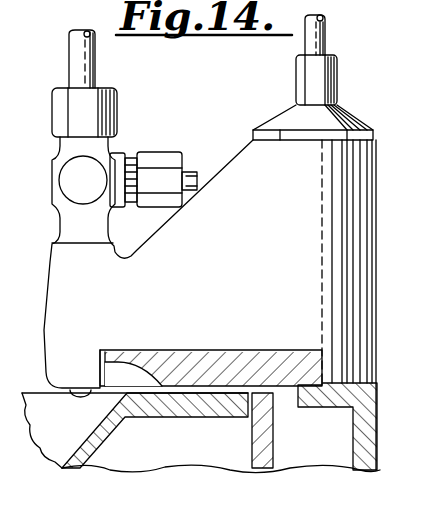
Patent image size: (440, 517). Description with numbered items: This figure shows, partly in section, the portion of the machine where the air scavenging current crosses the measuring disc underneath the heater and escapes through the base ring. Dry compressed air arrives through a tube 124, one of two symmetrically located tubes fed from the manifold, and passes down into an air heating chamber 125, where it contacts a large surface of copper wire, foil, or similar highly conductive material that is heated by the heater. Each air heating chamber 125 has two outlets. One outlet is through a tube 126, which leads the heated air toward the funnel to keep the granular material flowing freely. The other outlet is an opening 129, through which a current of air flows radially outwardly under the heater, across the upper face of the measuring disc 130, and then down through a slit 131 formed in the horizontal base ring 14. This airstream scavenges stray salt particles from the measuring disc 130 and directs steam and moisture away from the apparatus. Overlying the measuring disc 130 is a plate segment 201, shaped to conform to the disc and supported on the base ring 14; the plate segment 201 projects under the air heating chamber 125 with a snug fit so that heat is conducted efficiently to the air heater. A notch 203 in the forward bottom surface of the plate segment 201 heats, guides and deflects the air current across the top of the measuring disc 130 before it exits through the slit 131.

The base ring 14 is at (223, 428).
The tube 124 is at (326, 38).
The air heating chamber 125 is at (353, 243).
The tube 126 is at (93, 63).
The opening 129 is at (92, 398).
The measuring disc 130 is at (207, 407).
The slit 131 is at (340, 444).
The plate segment 201 is at (211, 351).
The notch 203 is at (126, 376).